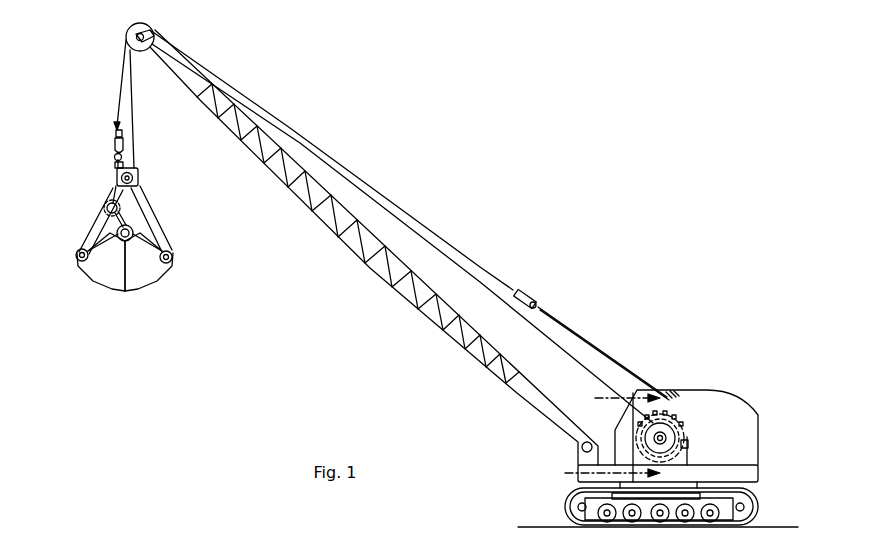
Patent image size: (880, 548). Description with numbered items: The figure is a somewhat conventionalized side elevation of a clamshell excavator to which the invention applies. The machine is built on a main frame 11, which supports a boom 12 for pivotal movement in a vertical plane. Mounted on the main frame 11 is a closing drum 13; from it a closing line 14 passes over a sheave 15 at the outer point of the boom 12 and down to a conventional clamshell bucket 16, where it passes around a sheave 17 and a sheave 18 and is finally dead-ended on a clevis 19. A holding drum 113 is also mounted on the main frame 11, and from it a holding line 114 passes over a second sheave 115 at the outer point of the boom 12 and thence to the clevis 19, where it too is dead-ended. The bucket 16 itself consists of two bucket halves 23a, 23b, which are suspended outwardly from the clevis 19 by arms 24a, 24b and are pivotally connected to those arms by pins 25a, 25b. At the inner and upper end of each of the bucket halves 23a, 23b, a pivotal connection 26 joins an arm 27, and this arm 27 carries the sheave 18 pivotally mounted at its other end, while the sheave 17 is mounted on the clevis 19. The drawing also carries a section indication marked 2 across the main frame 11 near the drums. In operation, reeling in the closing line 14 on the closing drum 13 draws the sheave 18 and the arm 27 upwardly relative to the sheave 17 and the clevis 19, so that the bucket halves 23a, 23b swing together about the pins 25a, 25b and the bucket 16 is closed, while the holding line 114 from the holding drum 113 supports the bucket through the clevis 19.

The main frame 11 is at (664, 458).
The boom 12 is at (393, 297).
The closing drum 13 is at (682, 425).
The holding drum 113 is at (689, 442).
The closing line 14 is at (203, 62).
The holding line 114 is at (120, 88).
The sheave 15 is at (127, 32).
The sheave 115 is at (153, 33).
The clamshell bucket 16 is at (124, 280).
The sheave 17 is at (139, 174).
The sheave 18 is at (106, 205).
The clevis 19 is at (116, 167).
The bucket half 23a is at (118, 278).
The bucket half 23b is at (143, 277).
The arm 24a is at (100, 225).
The arm 24b is at (140, 200).
The pin 25a is at (79, 260).
The pin 25b is at (173, 257).
The pivotal connection 26 is at (134, 232).
The arm 27 is at (127, 220).
The section line 2- 2 is at (603, 438).